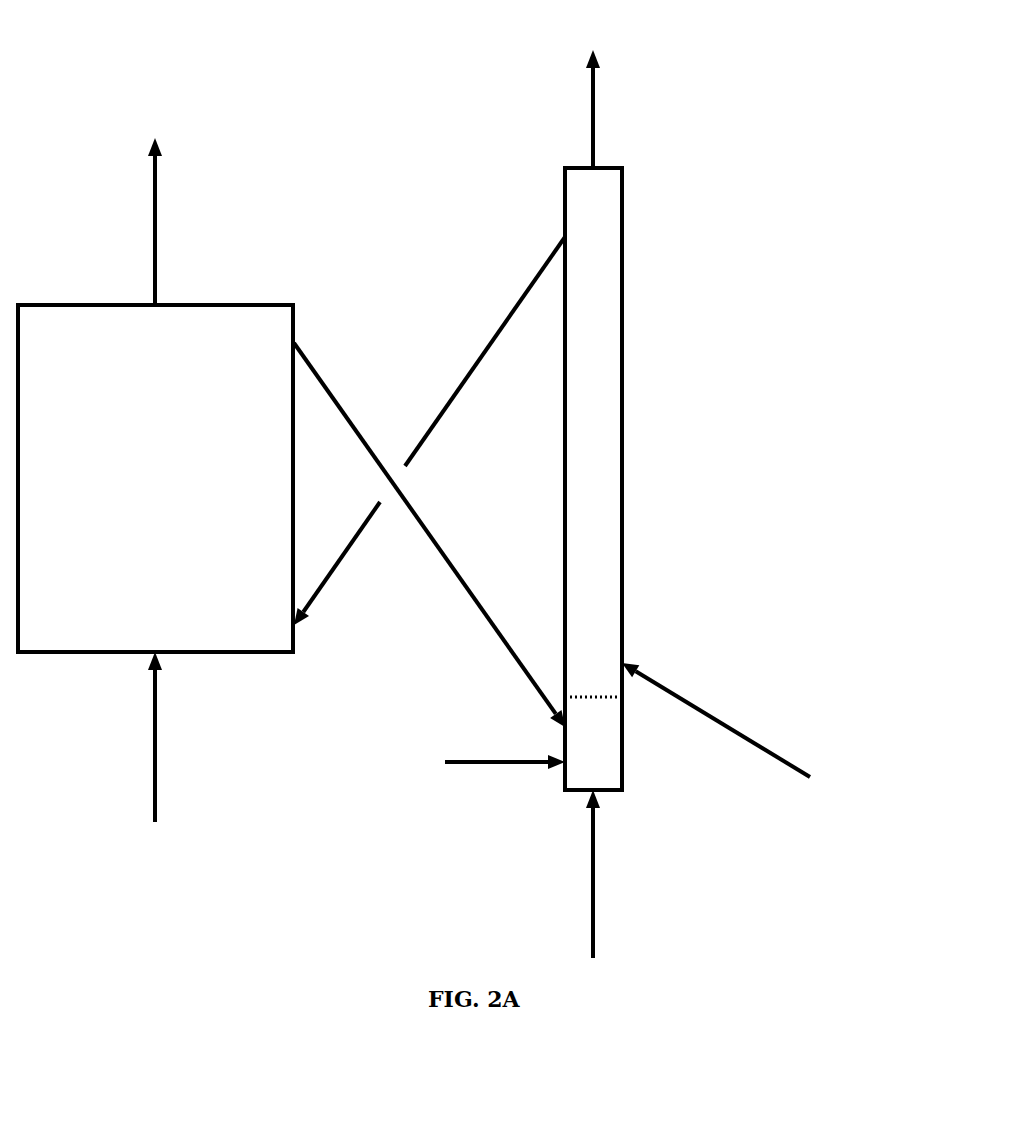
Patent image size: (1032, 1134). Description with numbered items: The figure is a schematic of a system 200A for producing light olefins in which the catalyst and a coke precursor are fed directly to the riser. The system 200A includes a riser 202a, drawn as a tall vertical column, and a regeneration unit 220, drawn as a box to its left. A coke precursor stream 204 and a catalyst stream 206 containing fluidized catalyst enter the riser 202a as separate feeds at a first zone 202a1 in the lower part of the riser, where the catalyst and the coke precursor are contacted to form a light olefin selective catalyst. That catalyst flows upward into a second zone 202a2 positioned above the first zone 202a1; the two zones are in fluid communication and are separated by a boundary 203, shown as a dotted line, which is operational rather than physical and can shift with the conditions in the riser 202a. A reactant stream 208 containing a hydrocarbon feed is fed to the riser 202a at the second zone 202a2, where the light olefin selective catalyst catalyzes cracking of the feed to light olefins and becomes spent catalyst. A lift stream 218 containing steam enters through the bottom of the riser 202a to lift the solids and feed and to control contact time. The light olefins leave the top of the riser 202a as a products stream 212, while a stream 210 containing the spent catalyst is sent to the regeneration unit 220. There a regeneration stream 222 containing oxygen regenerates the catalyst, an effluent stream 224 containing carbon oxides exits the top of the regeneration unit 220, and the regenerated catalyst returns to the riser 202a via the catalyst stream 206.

The system 200A is at (100, 97).
The regeneration unit 220 is at (155, 478).
The effluent stream 224 is at (160, 217).
The regeneration stream 222 is at (157, 757).
The riser 202a is at (624, 263).
The second zone 202a2 is at (593, 432).
The first zone 202a1 is at (593, 743).
The boundary 203 is at (584, 694).
The products stream 212 is at (597, 118).
The lift stream 218 is at (597, 876).
The coke precursor stream 204 is at (485, 764).
The catalyst stream 206 is at (475, 600).
The stream containing the spent catalyst 210 is at (498, 330).
The reactant stream 208 is at (790, 765).